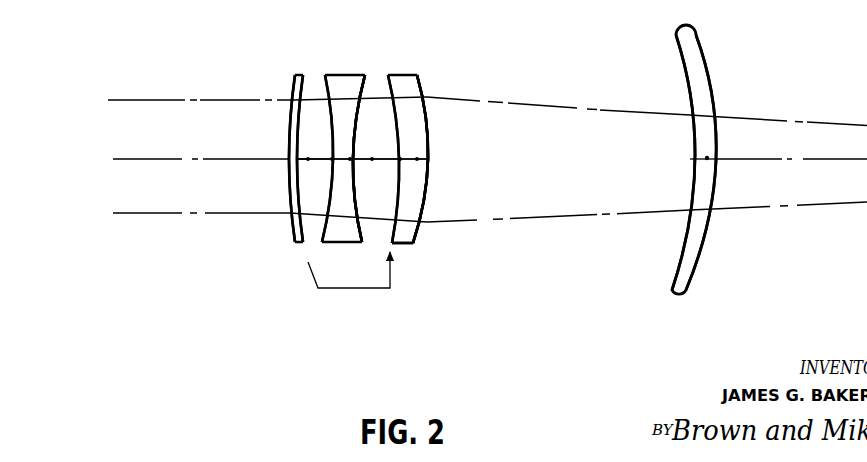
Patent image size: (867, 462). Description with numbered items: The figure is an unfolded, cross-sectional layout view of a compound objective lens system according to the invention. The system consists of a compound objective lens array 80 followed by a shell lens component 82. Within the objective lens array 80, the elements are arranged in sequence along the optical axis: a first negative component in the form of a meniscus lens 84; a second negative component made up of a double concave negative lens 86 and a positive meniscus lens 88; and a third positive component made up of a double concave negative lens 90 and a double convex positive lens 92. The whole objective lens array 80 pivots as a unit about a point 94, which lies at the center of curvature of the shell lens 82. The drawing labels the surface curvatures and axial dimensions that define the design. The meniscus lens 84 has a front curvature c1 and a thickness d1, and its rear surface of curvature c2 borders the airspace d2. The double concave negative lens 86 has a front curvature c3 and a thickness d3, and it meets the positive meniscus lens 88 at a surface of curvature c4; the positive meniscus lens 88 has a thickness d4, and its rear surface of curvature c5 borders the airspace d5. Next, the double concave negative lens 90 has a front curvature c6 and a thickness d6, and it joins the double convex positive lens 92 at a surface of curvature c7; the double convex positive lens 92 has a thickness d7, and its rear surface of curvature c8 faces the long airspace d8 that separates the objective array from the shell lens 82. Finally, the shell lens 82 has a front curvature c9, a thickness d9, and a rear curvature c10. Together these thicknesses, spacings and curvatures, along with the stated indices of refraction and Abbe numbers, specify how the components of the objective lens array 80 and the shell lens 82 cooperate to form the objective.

The compound objective lens array 80 is at (338, 298).
The shell lens component 82 is at (664, 303).
The meniscus lens 84 is at (302, 258).
The double concave negative lens 86 is at (350, 58).
The positive meniscus lens 88 is at (348, 148).
The double concave negative lens 90 is at (403, 248).
The double convex positive lens 92 is at (428, 228).
The pivot point 94 is at (371, 161).
The thickness of meniscus lens d1 is at (291, 158).
The airspace spacing d2 is at (294, 161).
The thickness of double concave negative lens d3 is at (332, 161).
The thickness of positive meniscus lens d4 is at (350, 157).
The airspace spacing d5 is at (373, 161).
The thickness of double concave negative lens d6 is at (401, 159).
The thickness of double convex positive lens d7 is at (419, 159).
The airspace spacing d8 is at (692, 159).
The thickness of shell lens d9 is at (706, 159).
The curvature of front surface of meniscus lens c1 is at (288, 207).
The curvature of rear surface of meniscus lens c2 is at (293, 255).
The curvature of front surface of double concave negative lens c3 is at (320, 237).
The curvature of surface between lenses c4 is at (348, 236).
The curvature of rear surface of positive meniscus lens c5 is at (372, 244).
The curvature of front surface of double concave negative lens c6 is at (390, 244).
The curvature of surface between lenses c7 is at (418, 244).
The curvature of rear surface of double convex positive lens c8 is at (428, 222).
The curvature of front surface of shell lens c9 is at (685, 237).
The curvature of rear surface of shell lens c10 is at (708, 247).